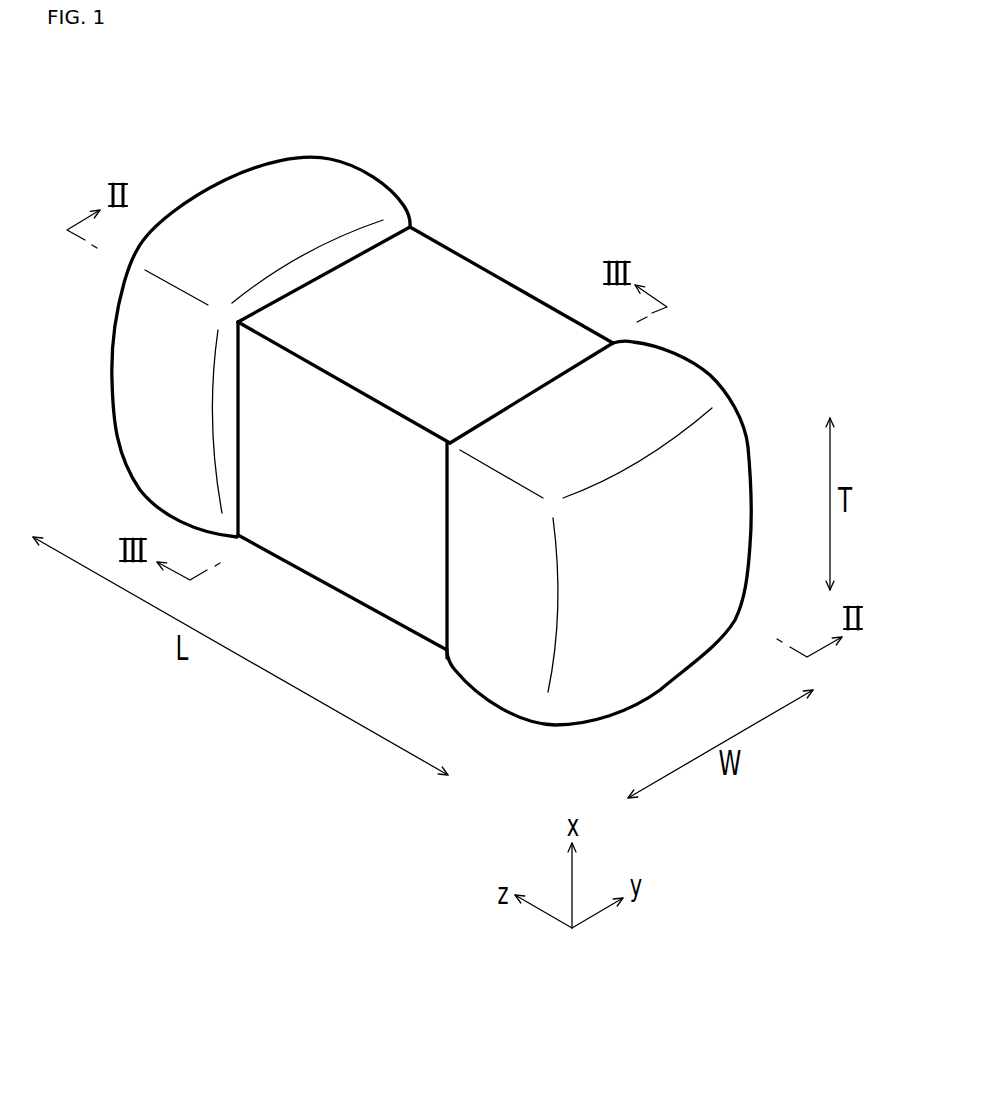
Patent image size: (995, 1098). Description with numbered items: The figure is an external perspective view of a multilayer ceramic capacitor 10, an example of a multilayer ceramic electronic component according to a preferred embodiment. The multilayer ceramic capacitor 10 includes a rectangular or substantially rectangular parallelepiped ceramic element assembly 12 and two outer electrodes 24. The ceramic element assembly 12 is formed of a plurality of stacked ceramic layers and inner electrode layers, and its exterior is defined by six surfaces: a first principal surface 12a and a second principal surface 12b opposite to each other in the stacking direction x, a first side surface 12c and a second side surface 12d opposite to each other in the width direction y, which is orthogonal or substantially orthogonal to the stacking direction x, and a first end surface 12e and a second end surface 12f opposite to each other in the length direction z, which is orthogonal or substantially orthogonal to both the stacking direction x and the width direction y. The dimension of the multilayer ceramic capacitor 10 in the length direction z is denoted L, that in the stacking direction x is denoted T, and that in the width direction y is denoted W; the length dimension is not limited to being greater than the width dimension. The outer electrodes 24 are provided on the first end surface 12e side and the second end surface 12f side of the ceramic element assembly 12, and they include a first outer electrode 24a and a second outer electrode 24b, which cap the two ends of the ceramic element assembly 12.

The multilayer ceramic capacitor 10 is at (389, 137).
The ceramic element assembly 12 is at (497, 278).
The first principal surface 12a is at (443, 268).
The second principal surface 12b is at (383, 583).
The first side surface 12c is at (330, 545).
The second side surface 12d is at (527, 317).
The first end surface 12e is at (243, 210).
The second end surface 12f is at (677, 538).
The outer electrodes 24 is at (173, 857).
The first outer electrode 24a is at (298, 158).
The second outer electrode 24b is at (710, 368).